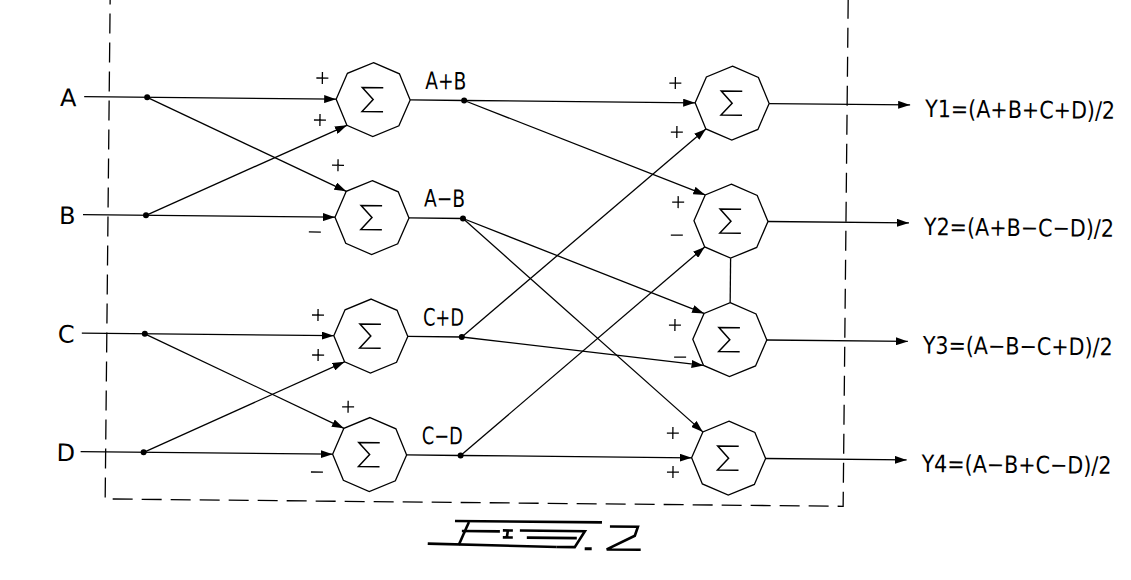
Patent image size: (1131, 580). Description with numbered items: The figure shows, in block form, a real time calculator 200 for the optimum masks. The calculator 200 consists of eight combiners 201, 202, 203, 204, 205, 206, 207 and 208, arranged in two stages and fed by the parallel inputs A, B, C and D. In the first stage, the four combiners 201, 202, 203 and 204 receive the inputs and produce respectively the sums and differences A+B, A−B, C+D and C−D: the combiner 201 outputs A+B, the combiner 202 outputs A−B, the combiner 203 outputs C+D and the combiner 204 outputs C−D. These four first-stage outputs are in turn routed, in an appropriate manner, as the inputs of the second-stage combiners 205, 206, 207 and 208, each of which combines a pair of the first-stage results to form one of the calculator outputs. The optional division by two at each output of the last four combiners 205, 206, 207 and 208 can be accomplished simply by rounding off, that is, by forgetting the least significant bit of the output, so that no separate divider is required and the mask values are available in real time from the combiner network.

The calculator 200 is at (253, 503).
The combiner 201 is at (401, 69).
The combiner 202 is at (402, 187).
The combiner 203 is at (401, 305).
The combiner 204 is at (399, 425).
The combiner 205 is at (750, 67).
The combiner 206 is at (759, 190).
The combiner 207 is at (761, 309).
The combiner 208 is at (762, 430).